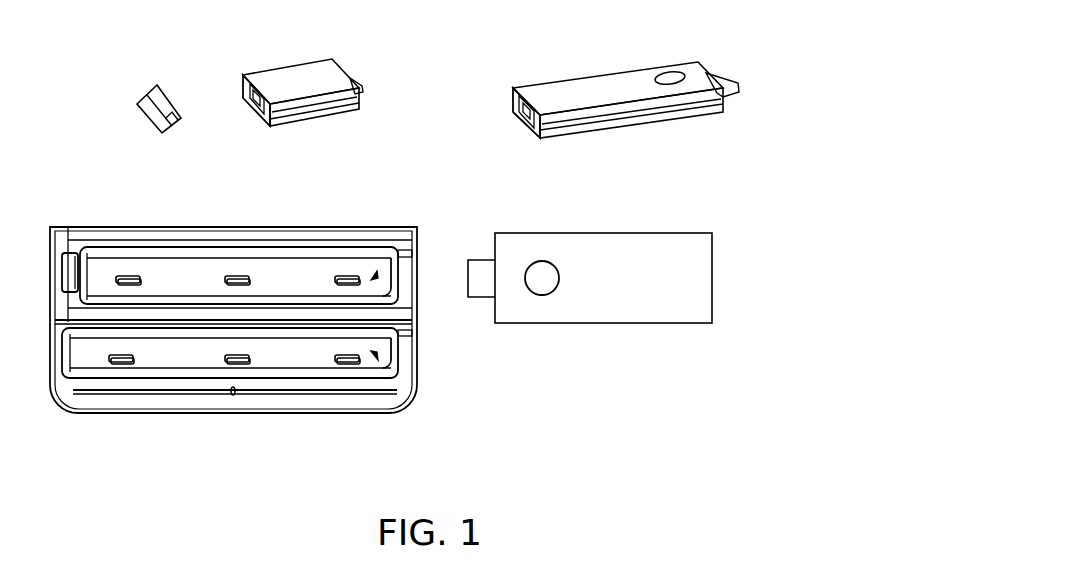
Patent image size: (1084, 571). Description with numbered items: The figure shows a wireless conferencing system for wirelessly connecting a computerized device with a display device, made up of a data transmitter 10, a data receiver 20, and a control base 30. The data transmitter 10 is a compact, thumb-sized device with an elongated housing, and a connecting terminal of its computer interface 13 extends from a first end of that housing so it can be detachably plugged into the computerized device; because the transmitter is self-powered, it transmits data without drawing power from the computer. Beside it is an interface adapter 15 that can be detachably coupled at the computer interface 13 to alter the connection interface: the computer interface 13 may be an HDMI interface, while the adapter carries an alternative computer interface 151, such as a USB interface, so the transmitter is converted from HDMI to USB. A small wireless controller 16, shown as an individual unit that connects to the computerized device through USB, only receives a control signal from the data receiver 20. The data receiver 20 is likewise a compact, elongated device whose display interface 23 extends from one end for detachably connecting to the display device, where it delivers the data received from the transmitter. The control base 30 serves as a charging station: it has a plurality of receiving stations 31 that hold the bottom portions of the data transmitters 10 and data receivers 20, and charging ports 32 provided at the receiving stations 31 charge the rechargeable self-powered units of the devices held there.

The data transmitter 10 is at (645, 75).
The computer interface 13 is at (725, 72).
The interface adapter 15 is at (283, 77).
The alternative computer interface 151 is at (357, 82).
The wireless controller 16 is at (168, 108).
The data receiver 20 is at (607, 305).
The display interface 23 is at (481, 288).
The control base 30 is at (153, 250).
The receiving station 31 is at (375, 273).
The charging port 32 is at (118, 277).